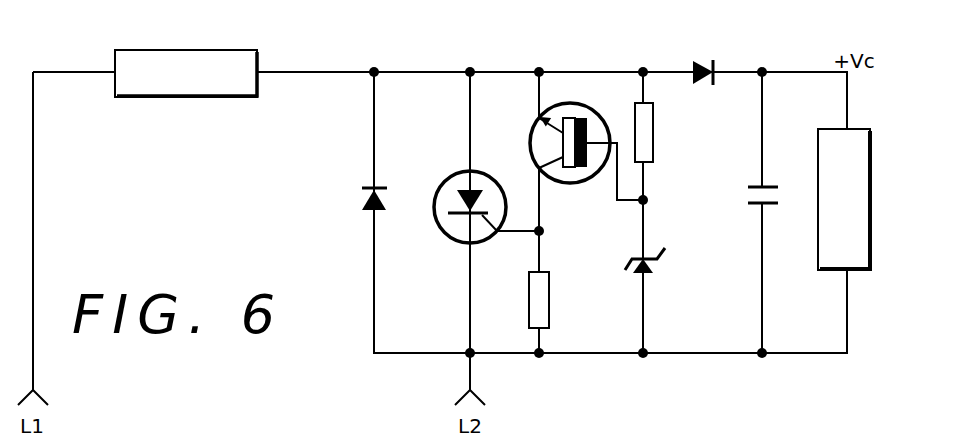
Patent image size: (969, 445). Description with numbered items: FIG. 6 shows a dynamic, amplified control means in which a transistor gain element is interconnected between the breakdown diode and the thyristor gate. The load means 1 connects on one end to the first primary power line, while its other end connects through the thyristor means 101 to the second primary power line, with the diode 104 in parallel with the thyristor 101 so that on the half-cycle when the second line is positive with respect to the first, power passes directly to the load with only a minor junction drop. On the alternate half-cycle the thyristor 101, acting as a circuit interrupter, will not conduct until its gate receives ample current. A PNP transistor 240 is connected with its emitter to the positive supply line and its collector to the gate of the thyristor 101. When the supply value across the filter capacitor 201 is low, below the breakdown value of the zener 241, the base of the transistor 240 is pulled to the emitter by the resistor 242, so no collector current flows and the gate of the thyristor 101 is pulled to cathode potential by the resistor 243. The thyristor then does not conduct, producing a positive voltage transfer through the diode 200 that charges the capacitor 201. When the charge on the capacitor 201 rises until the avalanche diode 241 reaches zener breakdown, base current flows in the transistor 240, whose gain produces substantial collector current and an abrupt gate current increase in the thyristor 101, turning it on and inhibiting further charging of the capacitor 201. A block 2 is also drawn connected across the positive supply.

The load means 1 is at (193, 62).
The control unit 2 is at (852, 165).
The diode 104 is at (360, 195).
The thyristor means 101 is at (460, 183).
The PNP transistor 240 is at (537, 147).
The resistor 242 is at (637, 155).
The zener diode 241 is at (650, 283).
The resistor 243 is at (542, 290).
The diode 200 is at (718, 63).
The filter capacitor 201 is at (742, 196).